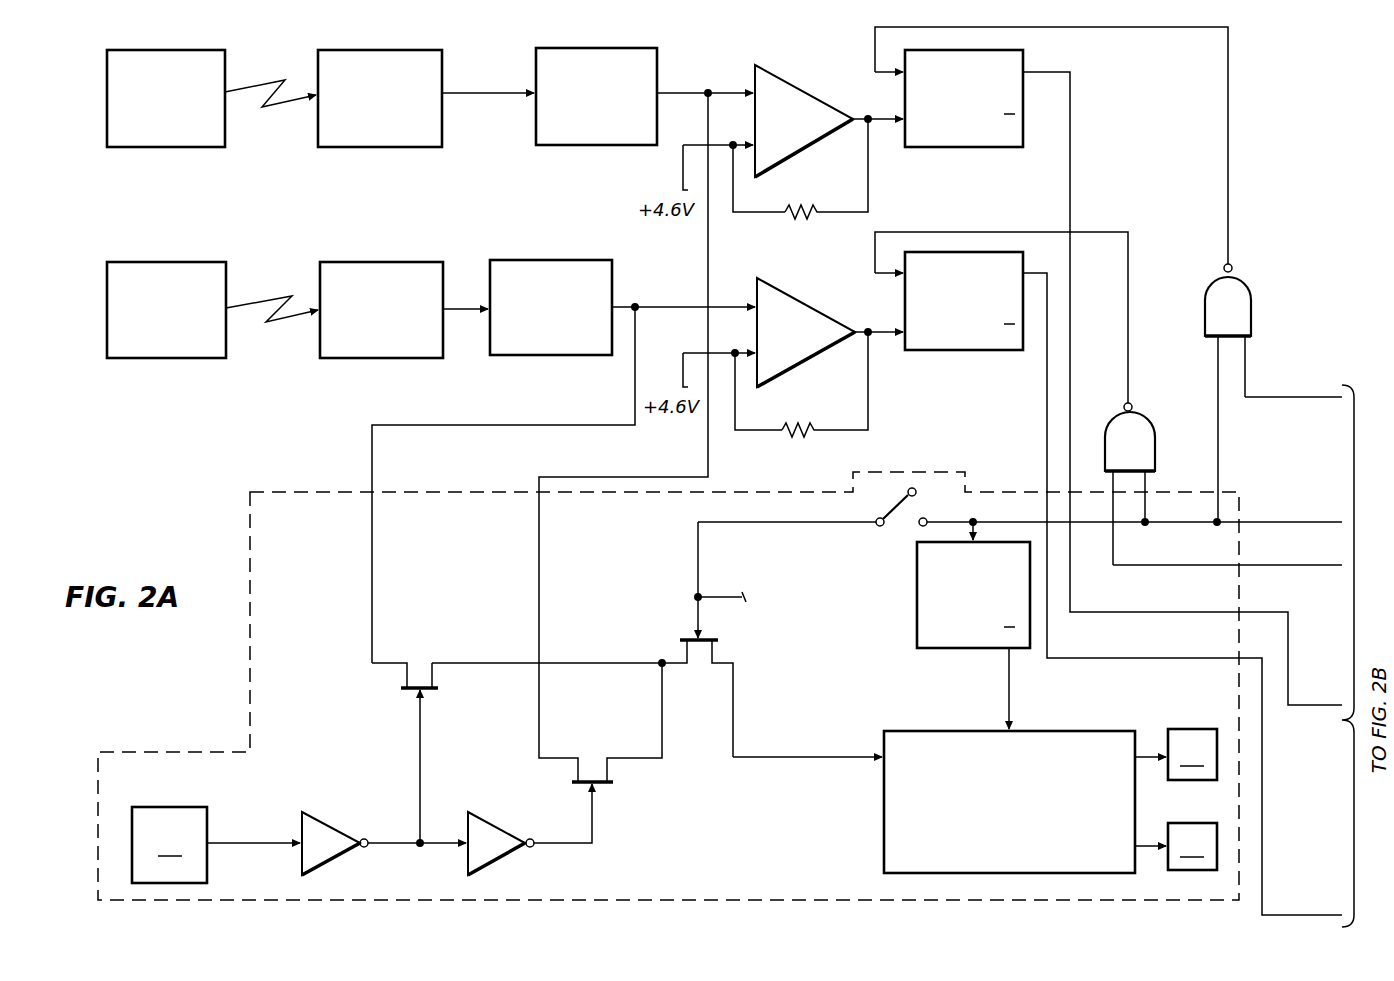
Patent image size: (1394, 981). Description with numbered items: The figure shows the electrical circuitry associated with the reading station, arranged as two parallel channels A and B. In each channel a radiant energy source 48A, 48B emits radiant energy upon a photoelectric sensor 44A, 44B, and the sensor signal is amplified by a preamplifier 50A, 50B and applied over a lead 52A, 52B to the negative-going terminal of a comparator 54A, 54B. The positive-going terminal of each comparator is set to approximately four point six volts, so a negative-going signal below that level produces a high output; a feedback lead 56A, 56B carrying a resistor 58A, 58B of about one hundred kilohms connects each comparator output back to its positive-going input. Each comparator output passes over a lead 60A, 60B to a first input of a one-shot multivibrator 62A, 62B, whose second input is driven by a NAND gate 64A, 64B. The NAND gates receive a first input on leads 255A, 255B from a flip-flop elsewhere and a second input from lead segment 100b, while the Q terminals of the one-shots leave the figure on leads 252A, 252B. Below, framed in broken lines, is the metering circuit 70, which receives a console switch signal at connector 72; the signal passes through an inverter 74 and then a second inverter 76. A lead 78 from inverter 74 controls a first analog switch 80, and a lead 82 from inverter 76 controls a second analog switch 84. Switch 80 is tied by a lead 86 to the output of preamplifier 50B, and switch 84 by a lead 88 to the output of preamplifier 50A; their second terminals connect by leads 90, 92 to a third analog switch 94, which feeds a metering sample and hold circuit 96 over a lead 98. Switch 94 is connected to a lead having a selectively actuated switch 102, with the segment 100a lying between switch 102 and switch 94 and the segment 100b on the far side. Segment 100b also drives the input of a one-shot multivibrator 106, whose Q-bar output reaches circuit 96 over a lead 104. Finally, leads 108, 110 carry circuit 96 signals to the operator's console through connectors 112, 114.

The photoelectric sensor 44A is at (393, 148).
The photoelectric sensor 44B is at (392, 359).
The radiant energy source 48A is at (190, 148).
The radiant energy source 48B is at (182, 359).
The preamplifier 50A is at (590, 146).
The preamplifier 50B is at (555, 356).
The lead 52A is at (688, 88).
The lead 52B is at (650, 304).
The comparator 54A is at (812, 76).
The comparator 54B is at (812, 290).
The lead 56A is at (826, 169).
The lead 56B is at (829, 384).
The resistor 58A is at (810, 198).
The resistor 58B is at (808, 418).
The lead 60A is at (884, 96).
The lead 60B is at (880, 322).
The one-shot multivibrator 62A is at (985, 148).
The one-shot multivibrator 62B is at (988, 351).
The NAND gate 64A is at (1254, 300).
The NAND gate 64B is at (1154, 423).
The metering circuit 70 is at (254, 492).
The connector 72 is at (169, 845).
The inverter 74 is at (326, 820).
The inverter 76 is at (492, 820).
The lead 78 is at (422, 770).
The first analog switch 80 is at (396, 694).
The lead 82 is at (594, 832).
The second analog switch 84 is at (614, 798).
The lead 86 is at (370, 592).
The lead 88 is at (538, 592).
The lead 90 is at (598, 660).
The lead 92 is at (662, 706).
The third analog switch 94 is at (740, 640).
The metering sample and hold circuit 96 is at (906, 730).
The lead 98 is at (804, 752).
The lead segment 100a is at (780, 525).
The lead segment 100b is at (1180, 524).
The selectively actuated switch 102 is at (892, 530).
The lead 104 is at (1008, 688).
The one-shot multivibrator 106 is at (915, 626).
The lead 108 is at (1146, 752).
The lead 110 is at (1148, 844).
The connector 112 is at (1192, 754).
The connector 114 is at (1192, 846).
The lead 252A is at (1072, 158).
The lead 252B is at (1045, 422).
The lead 255A is at (1264, 396).
The lead 255B is at (1292, 550).